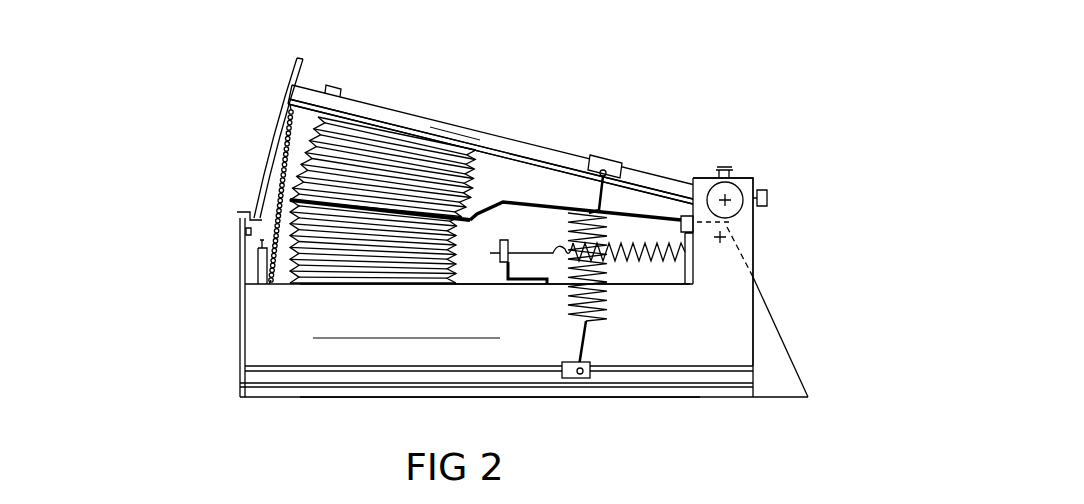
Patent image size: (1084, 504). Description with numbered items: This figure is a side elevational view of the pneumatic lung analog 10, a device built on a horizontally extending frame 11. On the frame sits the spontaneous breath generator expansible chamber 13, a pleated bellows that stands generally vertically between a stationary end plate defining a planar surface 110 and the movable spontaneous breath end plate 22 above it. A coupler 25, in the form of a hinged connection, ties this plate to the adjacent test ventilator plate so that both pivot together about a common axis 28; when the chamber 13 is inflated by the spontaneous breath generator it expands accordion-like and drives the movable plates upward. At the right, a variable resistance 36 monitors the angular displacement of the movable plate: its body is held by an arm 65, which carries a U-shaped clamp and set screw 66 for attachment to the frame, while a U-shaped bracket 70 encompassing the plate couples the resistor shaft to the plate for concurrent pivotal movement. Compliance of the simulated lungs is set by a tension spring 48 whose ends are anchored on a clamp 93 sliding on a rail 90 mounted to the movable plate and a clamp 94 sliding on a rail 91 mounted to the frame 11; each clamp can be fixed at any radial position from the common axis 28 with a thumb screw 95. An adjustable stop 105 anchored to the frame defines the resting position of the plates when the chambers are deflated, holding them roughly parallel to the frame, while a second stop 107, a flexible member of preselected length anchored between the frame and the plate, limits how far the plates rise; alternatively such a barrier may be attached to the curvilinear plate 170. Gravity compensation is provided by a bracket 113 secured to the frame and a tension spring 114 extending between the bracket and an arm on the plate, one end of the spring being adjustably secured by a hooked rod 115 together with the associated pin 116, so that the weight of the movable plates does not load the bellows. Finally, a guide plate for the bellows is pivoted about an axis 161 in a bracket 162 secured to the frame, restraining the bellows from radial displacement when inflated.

The pneumatic lung analog 10 is at (567, 106).
The frame 11 is at (346, 325).
The spontaneous breath generator expansible chamber 13 is at (303, 178).
The movable spontaneous breath end plate 22 is at (421, 120).
The coupler 25 is at (334, 86).
The common axis 28 is at (751, 196).
The variable resistance 36 is at (731, 193).
The tension spring 48 is at (604, 240).
The arm 65 is at (725, 297).
The U-shaped clamp and set screw 66 is at (770, 376).
The U-shaped bracket 70 is at (692, 148).
The rail 90 is at (648, 184).
The rail 91 is at (641, 376).
The clamp 93 is at (592, 159).
The clamp 94 is at (563, 374).
The thumb screw 95 is at (605, 172).
The adjustable stop 105 is at (258, 264).
The second stop 107 is at (283, 146).
The planar surface 110 is at (465, 283).
The bracket 113 is at (529, 283).
The tension spring 114 is at (637, 262).
The rod 115 is at (540, 252).
The pin 116 is at (504, 240).
The axis 161 is at (728, 233).
The bracket 162 is at (689, 270).
The curvilinear plate 170 is at (295, 66).